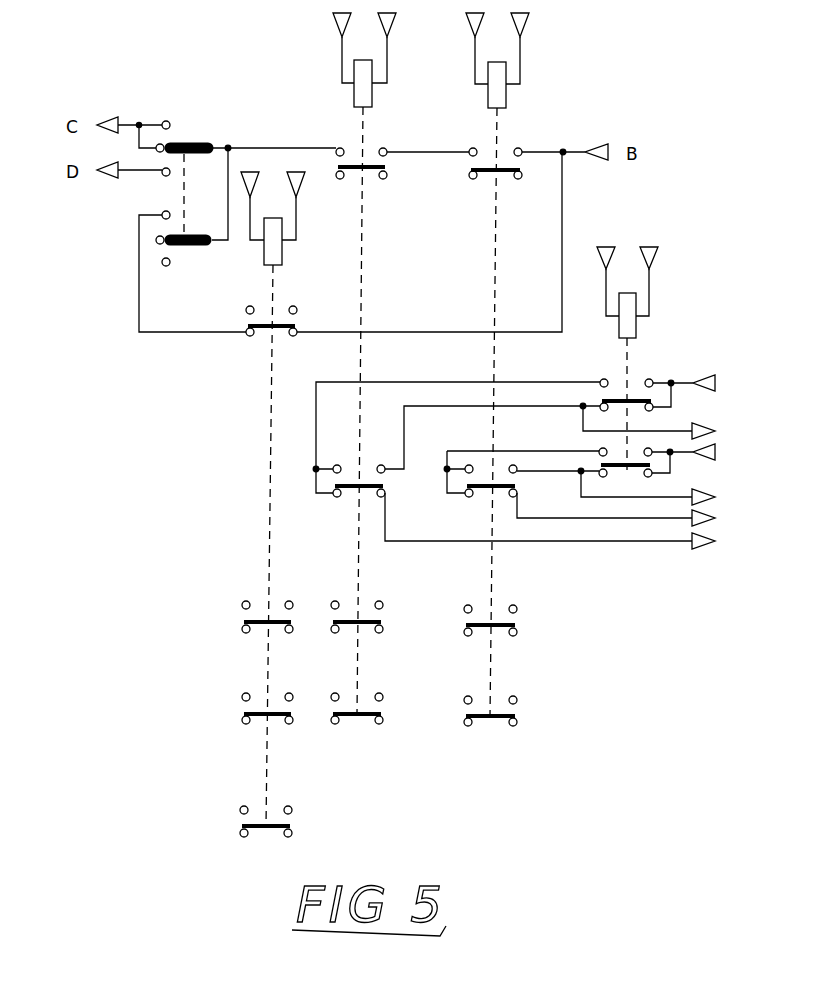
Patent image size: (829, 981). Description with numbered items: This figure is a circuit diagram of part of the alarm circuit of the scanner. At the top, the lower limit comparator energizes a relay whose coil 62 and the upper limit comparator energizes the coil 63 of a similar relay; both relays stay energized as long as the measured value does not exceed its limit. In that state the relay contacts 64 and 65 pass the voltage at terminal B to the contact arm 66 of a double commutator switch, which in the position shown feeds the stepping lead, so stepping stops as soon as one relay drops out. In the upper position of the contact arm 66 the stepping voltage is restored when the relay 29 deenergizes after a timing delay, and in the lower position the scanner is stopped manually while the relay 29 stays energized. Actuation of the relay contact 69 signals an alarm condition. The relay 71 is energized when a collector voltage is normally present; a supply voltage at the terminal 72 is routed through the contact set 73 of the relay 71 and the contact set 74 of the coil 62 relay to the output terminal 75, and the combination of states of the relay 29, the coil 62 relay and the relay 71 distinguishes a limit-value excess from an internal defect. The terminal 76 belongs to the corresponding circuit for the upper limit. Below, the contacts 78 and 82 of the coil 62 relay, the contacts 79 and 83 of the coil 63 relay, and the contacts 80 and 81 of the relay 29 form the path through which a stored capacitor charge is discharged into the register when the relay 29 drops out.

The relay 29 is at (275, 499).
The relay coil 62 is at (368, 363).
The relay coil 63 is at (490, 364).
The relay contact 64 is at (362, 175).
The relay contact 65 is at (489, 175).
The contact arm 66 is at (246, 192).
The relay contact 69 is at (270, 605).
The relay 71 is at (632, 358).
The terminal 72 is at (700, 390).
The contact set 73 is at (625, 384).
The contact set 74 is at (354, 470).
The output terminal 75 is at (665, 424).
The output terminal 76 is at (566, 523).
The relay contact 78 is at (361, 697).
The relay contact 79 is at (493, 700).
The relay contact 80 is at (270, 696).
The relay contact 81 is at (269, 808).
The relay contact 82 is at (359, 605).
The relay contact 83 is at (493, 608).